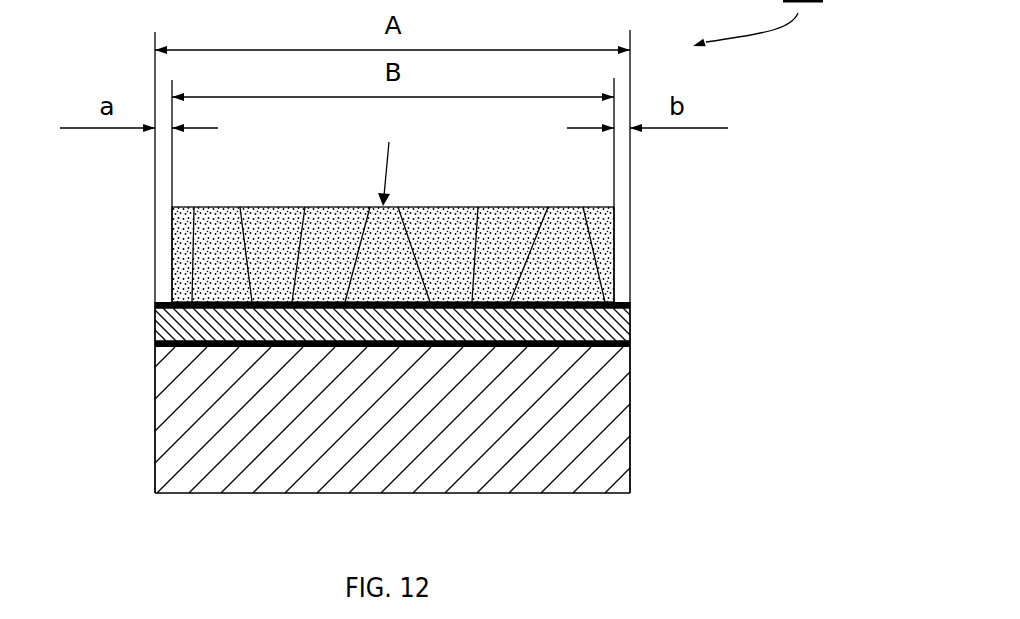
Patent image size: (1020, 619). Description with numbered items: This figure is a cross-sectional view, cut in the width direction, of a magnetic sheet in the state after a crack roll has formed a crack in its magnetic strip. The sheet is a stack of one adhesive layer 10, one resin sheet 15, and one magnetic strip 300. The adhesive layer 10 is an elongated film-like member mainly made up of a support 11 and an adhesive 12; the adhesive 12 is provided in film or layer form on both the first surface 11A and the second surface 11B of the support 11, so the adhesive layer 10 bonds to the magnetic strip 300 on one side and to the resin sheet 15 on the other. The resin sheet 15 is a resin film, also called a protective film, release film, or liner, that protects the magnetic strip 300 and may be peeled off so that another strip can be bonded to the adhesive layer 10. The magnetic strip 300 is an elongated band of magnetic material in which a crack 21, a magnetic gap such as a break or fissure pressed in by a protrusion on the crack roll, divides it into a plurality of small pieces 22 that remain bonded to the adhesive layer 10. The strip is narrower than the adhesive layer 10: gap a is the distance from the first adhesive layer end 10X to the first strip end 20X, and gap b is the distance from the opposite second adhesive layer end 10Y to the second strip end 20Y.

The adhesive layer 10 is at (735, 319).
The support 11 is at (632, 323).
The adhesive 12 is at (587, 299).
The resin sheet 15 is at (632, 452).
The crack 21 is at (410, 238).
The small pieces 22 is at (335, 207).
The magnetic strip 300 is at (389, 159).
The first strip end 20X is at (170, 222).
The second strip end 20Y is at (617, 225).
The first adhesive layer end 10X is at (153, 305).
The second adhesive layer end 10Y is at (632, 302).
The first surface 11A is at (207, 298).
The second surface 11B is at (207, 350).